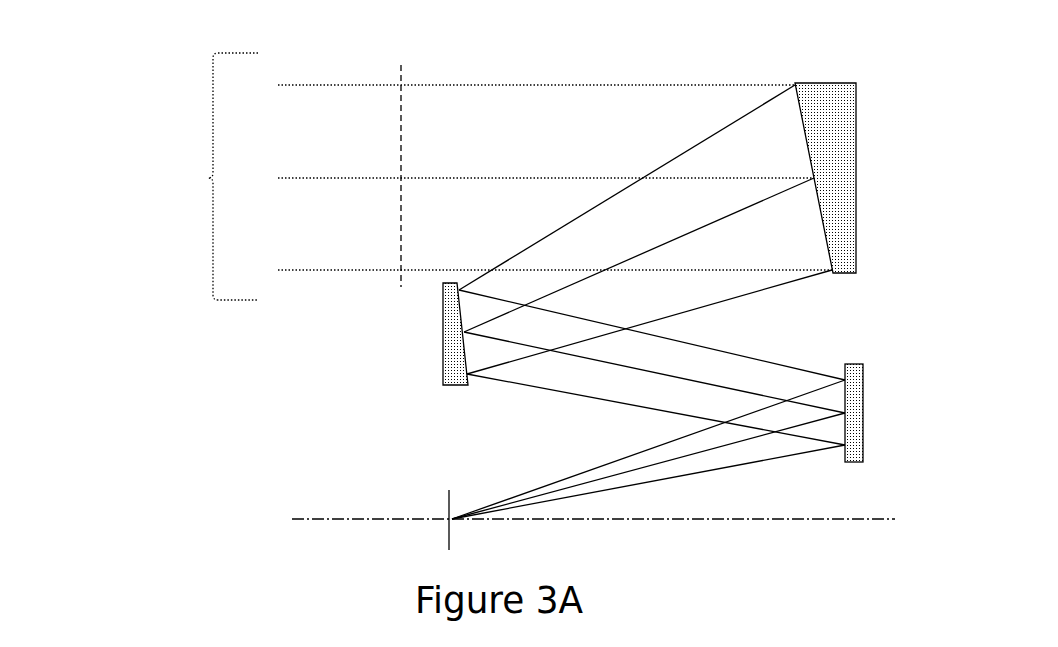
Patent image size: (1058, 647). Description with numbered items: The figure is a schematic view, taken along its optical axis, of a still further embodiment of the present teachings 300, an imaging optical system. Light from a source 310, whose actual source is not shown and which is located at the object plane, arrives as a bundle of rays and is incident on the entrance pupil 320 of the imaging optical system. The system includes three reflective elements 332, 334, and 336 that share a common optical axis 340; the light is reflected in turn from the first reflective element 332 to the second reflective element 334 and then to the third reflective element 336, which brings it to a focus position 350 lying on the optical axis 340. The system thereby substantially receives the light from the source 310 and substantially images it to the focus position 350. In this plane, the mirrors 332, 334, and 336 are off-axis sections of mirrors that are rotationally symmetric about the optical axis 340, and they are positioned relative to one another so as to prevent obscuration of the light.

The embodiment of the present teachings 300 is at (125, 72).
The source 310 is at (206, 178).
The entrance pupil 320 is at (401, 287).
The reflective element 332 is at (856, 122).
The reflective element 334 is at (443, 356).
The reflective element 336 is at (863, 412).
The optical axis 340 is at (327, 519).
The focus position 350 is at (448, 505).